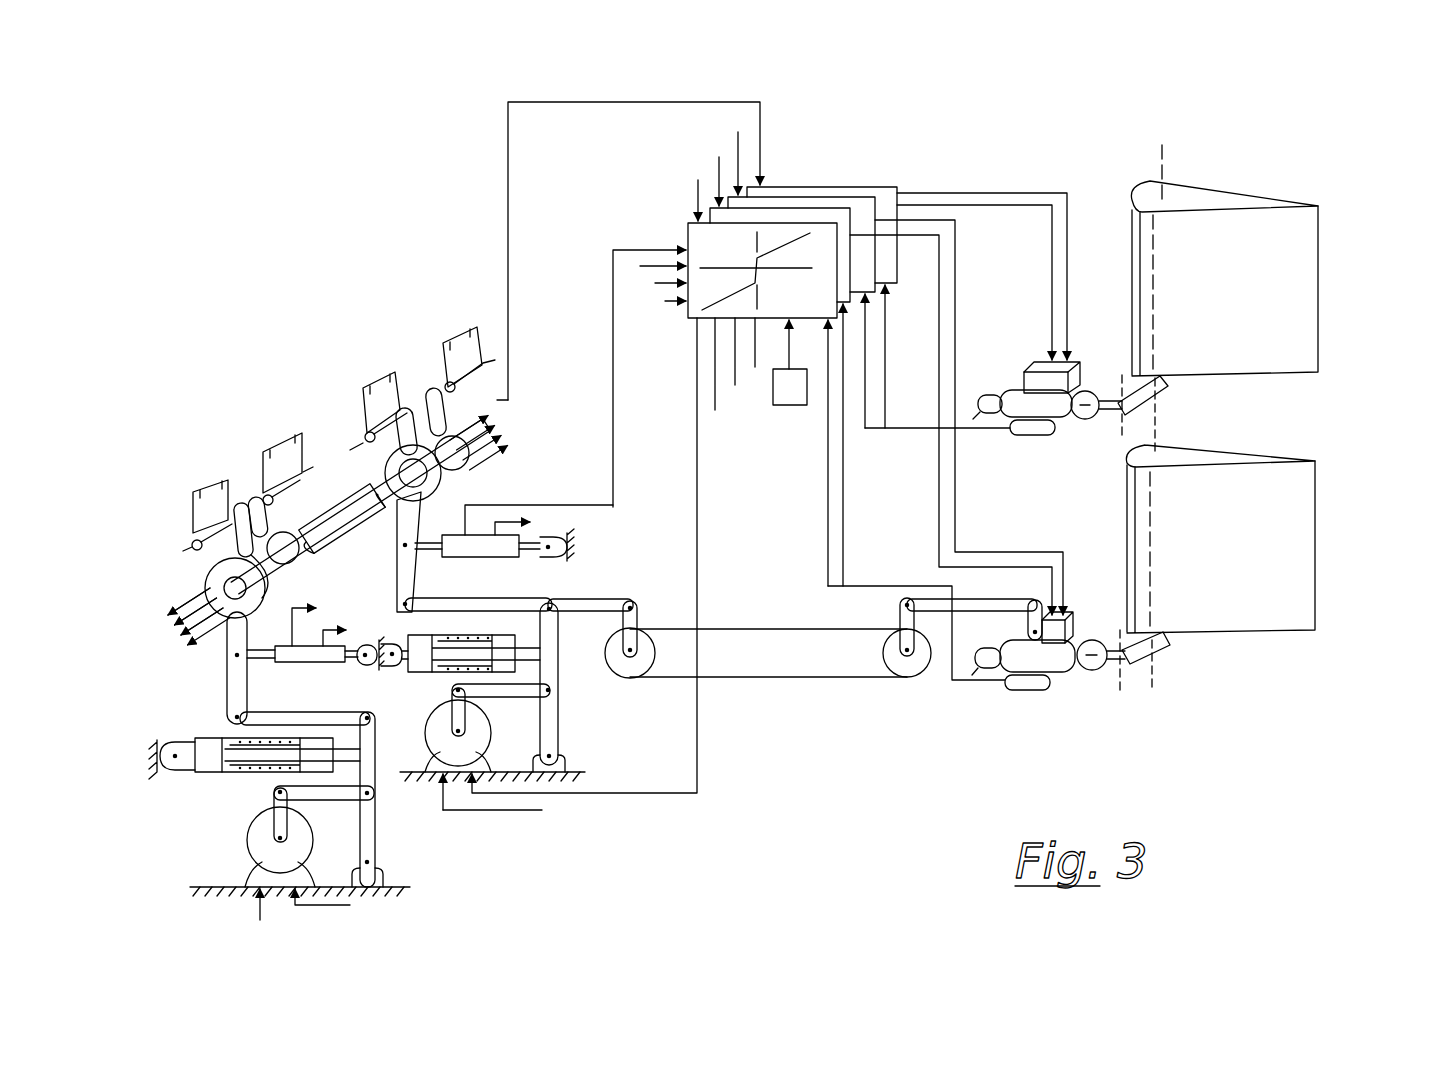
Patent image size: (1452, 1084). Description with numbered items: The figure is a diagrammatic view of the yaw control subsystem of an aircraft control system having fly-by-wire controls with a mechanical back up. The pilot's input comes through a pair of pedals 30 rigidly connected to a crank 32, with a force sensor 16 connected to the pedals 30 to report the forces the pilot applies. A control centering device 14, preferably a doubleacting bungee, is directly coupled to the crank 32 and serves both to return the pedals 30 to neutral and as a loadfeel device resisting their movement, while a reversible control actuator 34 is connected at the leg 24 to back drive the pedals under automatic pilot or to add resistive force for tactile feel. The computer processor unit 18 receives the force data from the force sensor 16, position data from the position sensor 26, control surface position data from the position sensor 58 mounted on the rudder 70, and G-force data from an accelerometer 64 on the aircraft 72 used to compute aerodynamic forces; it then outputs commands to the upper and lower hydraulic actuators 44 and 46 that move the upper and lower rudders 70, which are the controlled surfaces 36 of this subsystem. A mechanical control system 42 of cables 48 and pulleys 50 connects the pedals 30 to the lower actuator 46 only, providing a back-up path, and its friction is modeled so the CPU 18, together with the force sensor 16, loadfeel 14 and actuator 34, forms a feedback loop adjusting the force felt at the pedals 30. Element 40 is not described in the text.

The control centering device 14 is at (438, 676).
The force sensor 16 is at (478, 470).
The computer processor unit 18 is at (850, 185).
The leg 24 is at (560, 720).
The position sensor 26 is at (525, 558).
The pedals 30 is at (245, 495).
The crank 32 is at (415, 598).
The reversible control actuator 34 is at (248, 832).
The controlled surfaces 36 is at (1352, 366).
The shaft collar 40 is at (338, 500).
The mechanical control system 42 is at (890, 703).
The hydraulic actuator 44 is at (1105, 380).
The hydraulic actuator 46 is at (1100, 625).
The cables 48 is at (830, 680).
The pulleys 50 is at (655, 652).
The control surface position sensor 58 is at (1045, 440).
The accelerometer 64 is at (785, 408).
The rudders 70 is at (1320, 266).
The aircraft 72 is at (770, 798).